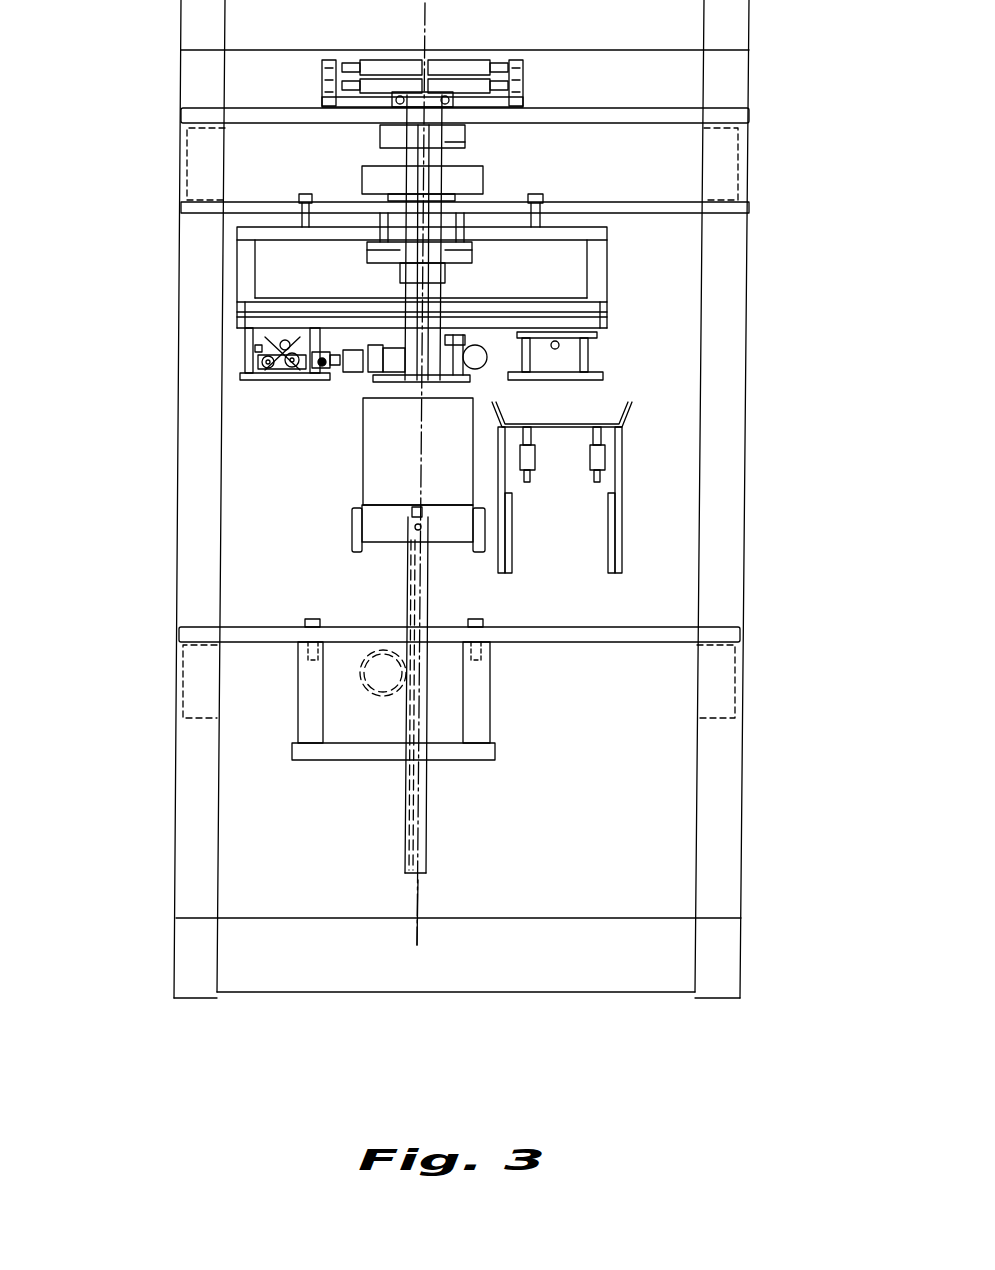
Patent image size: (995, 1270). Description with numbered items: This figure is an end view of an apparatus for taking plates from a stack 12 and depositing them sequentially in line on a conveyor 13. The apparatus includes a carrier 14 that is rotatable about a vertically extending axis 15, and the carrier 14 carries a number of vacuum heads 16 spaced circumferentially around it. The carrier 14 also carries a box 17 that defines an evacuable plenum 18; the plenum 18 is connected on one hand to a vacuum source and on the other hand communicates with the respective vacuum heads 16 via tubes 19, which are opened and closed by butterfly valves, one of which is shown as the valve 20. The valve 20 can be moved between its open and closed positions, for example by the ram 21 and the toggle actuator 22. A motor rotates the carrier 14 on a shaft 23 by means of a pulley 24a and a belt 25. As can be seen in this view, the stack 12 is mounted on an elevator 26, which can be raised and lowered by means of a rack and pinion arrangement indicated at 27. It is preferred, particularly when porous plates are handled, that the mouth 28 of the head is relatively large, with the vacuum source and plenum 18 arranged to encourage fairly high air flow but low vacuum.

The stack 12 is at (351, 453).
The conveyor 13 is at (644, 421).
The carrier 14 is at (621, 311).
The vertically extending axis 15 is at (418, 896).
The vacuum heads 16 is at (595, 353).
The box 17 is at (610, 265).
The evacuable plenum 18 is at (238, 277).
The tubes 19 is at (608, 327).
The butterfly valve 20 is at (247, 342).
The ram 21 is at (352, 355).
The toggle actuator 22 is at (263, 362).
The shaft 23 is at (445, 160).
The pulley 24a is at (360, 164).
The belt 25 is at (370, 177).
The elevator 26 is at (334, 562).
The rack and pinion arrangement 27 is at (385, 708).
The mouth 28 is at (607, 380).